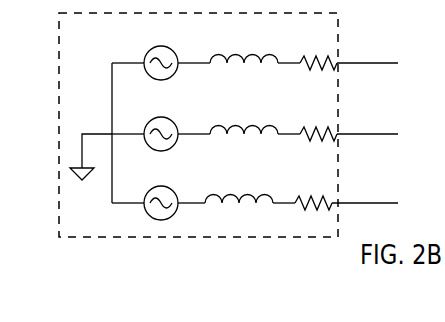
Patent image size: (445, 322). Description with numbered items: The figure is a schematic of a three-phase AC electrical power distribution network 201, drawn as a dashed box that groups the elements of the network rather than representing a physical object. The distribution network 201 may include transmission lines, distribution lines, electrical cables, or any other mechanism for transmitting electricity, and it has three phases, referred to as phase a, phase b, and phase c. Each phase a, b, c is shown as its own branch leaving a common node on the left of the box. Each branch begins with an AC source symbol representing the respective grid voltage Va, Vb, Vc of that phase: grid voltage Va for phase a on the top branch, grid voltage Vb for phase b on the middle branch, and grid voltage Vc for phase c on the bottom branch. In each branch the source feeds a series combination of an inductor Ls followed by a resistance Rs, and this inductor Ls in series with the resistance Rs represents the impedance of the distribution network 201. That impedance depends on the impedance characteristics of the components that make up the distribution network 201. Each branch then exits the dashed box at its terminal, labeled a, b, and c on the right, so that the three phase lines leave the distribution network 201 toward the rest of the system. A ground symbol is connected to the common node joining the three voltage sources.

The three-phase AC electrical power distribution network 201 is at (99, 44).
The grid voltage of phase a Va is at (161, 52).
The grid voltage of phase b Vb is at (161, 121).
The grid voltage of phase c Vc is at (161, 191).
The inductor Ls is at (239, 115).
The resistance Rs is at (316, 119).
The phase a is at (367, 51).
The phase b is at (367, 121).
The phase c is at (365, 188).